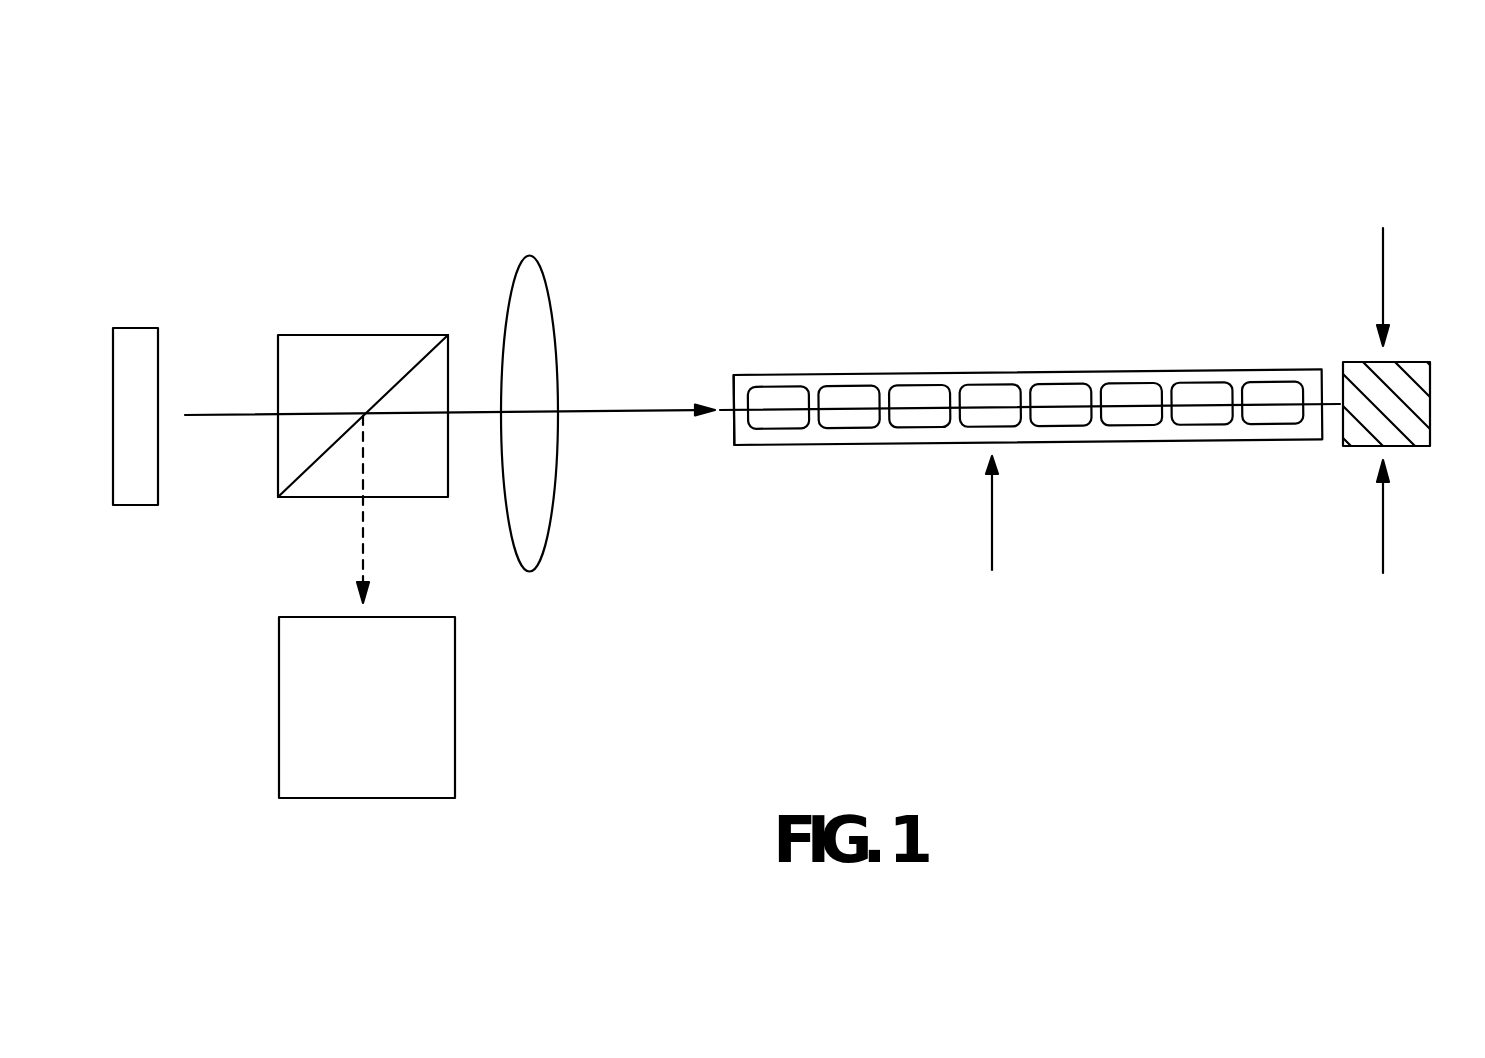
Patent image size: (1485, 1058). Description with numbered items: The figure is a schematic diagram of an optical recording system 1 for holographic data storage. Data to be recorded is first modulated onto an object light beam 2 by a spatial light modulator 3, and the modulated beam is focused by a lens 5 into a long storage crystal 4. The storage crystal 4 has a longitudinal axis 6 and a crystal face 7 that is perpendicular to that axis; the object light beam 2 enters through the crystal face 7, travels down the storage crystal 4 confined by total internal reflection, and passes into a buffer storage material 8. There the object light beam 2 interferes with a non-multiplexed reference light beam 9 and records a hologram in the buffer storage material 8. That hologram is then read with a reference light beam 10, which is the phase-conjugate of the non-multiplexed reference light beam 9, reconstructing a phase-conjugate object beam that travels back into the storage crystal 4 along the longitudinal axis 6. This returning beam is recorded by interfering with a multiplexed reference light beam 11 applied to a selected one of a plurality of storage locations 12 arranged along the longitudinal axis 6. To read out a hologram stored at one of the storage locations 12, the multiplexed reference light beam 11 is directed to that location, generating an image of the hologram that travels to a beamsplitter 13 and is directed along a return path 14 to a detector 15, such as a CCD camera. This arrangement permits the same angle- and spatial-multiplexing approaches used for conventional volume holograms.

The optical recording system 1 is at (483, 155).
The object light beam 2 is at (211, 414).
The spatial light modulator 3 is at (133, 505).
The storage crystal 4 is at (1015, 420).
The lens 5 is at (543, 278).
The longitudinal axis 6 is at (811, 408).
The crystal face 7 is at (733, 429).
The buffer storage material 8 is at (1431, 388).
The non-multiplexed reference light beam 9 is at (1383, 267).
The reference light beam 10 is at (1382, 540).
The multiplexed reference light beam 11 is at (988, 537).
The storage locations 12 is at (832, 421).
The beamsplitter 13 is at (350, 335).
The return path 14 is at (363, 527).
The detector 15 is at (333, 753).